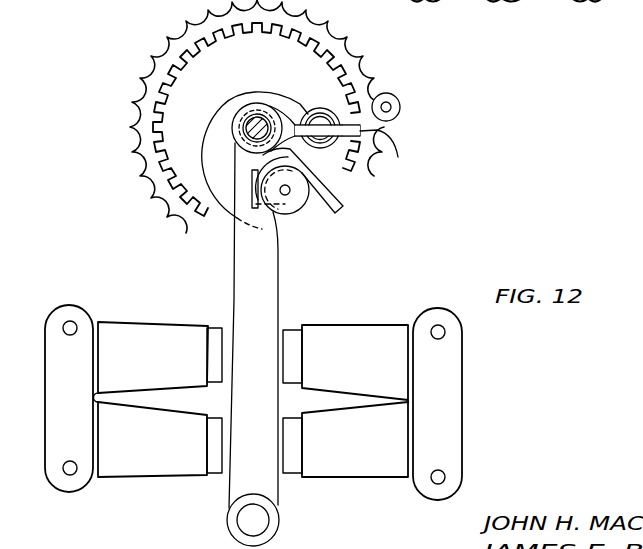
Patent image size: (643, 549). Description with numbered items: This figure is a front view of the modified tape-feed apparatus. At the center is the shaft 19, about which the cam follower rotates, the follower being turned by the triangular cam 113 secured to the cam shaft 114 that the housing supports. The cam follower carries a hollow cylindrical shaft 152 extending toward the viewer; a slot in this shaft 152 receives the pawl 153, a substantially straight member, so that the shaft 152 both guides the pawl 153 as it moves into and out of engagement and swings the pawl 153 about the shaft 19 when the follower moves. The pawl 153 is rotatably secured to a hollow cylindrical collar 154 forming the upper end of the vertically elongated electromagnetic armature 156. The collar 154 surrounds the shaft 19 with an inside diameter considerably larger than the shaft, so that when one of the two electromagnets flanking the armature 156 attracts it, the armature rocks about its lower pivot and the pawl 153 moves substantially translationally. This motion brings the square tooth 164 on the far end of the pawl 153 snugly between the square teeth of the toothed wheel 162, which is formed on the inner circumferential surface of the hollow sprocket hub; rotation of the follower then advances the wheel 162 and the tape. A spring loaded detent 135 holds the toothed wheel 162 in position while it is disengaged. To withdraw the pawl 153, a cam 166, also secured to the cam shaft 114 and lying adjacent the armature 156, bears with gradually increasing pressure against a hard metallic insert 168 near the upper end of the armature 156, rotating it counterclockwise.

The shaft 19 is at (259, 124).
The triangular cam 113 is at (308, 214).
The cam shaft 114 is at (286, 197).
The spring loaded detent 135 is at (400, 108).
The hollow cylindrical shaft 152 is at (297, 124).
The pawl 153 is at (321, 110).
The hollow cylindrical collar 154 is at (250, 120).
The electromagnetic armature 156 is at (242, 290).
The toothed wheel 162 is at (346, 55).
The square tooth 164 is at (394, 152).
The cam 166 is at (297, 221).
The hard metallic insert 168 is at (252, 199).